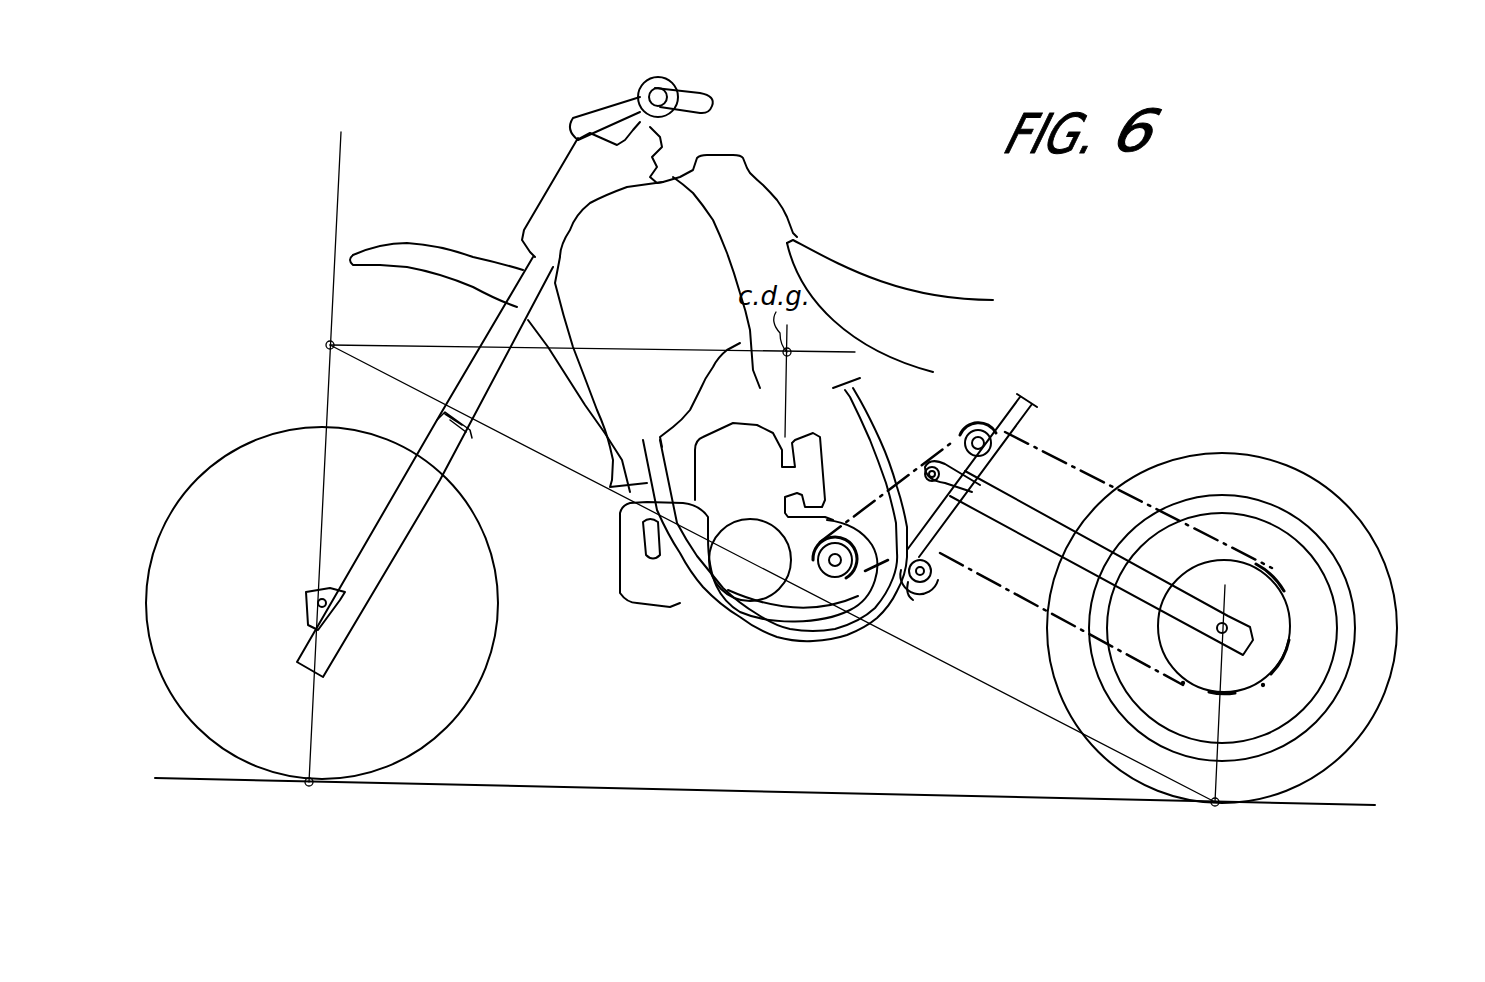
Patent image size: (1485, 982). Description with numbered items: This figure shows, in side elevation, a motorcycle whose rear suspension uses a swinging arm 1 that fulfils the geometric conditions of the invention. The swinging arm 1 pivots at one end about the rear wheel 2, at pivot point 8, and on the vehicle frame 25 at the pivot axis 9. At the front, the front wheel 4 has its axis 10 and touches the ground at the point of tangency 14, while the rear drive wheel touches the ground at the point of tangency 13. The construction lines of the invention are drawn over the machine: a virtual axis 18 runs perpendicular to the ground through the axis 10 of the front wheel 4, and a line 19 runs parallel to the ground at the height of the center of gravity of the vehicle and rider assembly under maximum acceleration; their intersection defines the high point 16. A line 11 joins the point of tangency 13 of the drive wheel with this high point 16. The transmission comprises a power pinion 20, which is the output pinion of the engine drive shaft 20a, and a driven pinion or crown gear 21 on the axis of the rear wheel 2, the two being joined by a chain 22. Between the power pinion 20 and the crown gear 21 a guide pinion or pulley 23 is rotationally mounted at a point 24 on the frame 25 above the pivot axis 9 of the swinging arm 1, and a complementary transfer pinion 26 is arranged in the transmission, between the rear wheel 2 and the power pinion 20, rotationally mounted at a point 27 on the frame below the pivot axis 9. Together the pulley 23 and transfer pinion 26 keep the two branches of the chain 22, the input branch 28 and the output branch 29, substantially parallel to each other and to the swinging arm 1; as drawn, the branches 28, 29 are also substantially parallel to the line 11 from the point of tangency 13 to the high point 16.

The swinging arm 1 is at (1147, 510).
The rear wheel 2 is at (1335, 742).
The front wheel 4 is at (455, 672).
The pivot point 8 is at (1240, 620).
The pivot axis 9 is at (940, 450).
The axis of the front wheel 10 is at (327, 593).
The line 11 is at (550, 456).
The point of tangency 13 is at (1218, 717).
The point of tangency 14 is at (316, 800).
The high point 16 is at (325, 345).
The virtual axis 18 is at (330, 395).
The line 19 is at (407, 340).
The power pinion 20 is at (837, 578).
The engine drive shaft 20a is at (833, 565).
The driven pinion or crown gear 21 is at (1263, 608).
The chain 22 is at (1080, 450).
The guide pinion or pulley 23 is at (1023, 397).
The point 24 is at (983, 425).
The frame 25 is at (863, 403).
The transfer pinion 26 is at (922, 583).
The point 27 is at (910, 585).
The input branch 28 is at (1060, 620).
The output branch 29 is at (1100, 503).